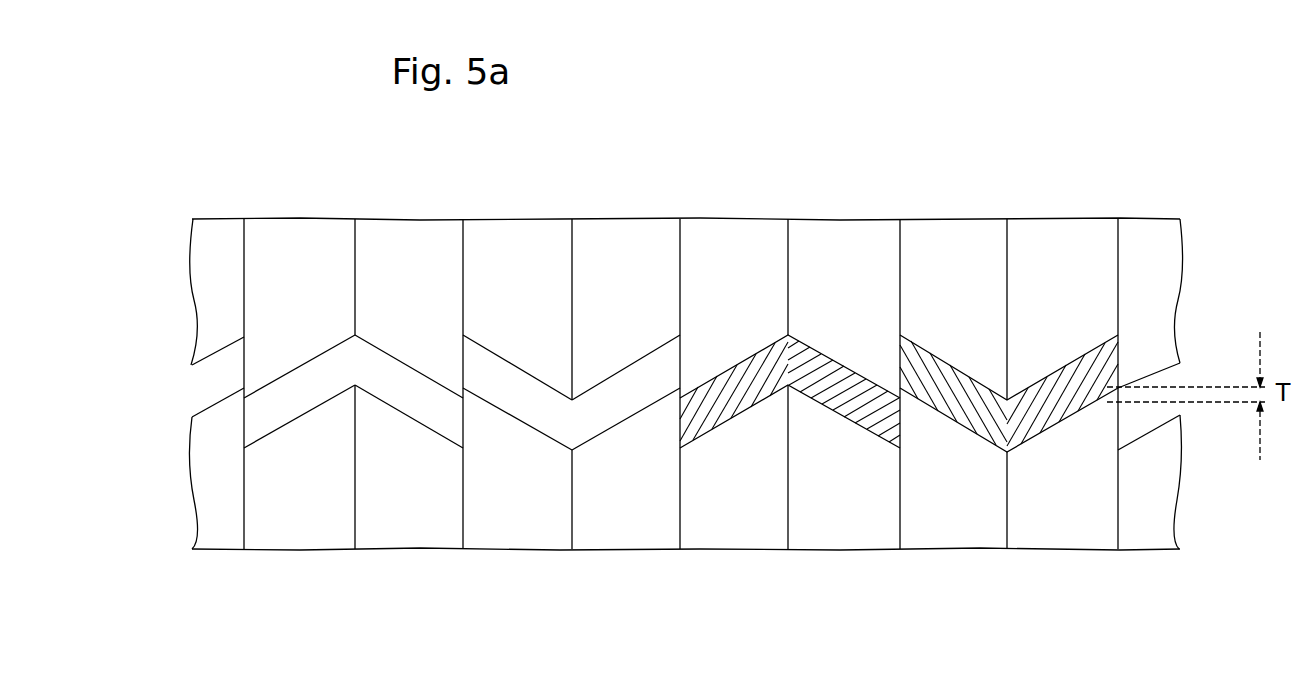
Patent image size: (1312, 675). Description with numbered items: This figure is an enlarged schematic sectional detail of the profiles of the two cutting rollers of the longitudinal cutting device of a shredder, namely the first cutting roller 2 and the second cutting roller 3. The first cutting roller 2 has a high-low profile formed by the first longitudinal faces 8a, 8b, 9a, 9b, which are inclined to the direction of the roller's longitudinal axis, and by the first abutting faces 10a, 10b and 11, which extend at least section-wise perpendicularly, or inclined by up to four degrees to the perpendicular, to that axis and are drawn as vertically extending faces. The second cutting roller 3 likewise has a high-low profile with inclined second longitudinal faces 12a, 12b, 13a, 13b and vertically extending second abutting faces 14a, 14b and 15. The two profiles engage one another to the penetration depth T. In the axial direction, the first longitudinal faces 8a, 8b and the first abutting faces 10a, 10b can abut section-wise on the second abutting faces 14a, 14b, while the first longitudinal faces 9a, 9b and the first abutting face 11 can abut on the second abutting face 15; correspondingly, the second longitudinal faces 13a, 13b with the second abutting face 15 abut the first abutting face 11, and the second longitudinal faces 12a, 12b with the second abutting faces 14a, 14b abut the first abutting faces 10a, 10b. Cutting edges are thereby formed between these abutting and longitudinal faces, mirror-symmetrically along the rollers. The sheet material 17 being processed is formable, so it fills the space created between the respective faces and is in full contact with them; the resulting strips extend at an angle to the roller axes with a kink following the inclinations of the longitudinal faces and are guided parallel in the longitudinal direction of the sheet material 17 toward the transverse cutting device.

The first cutting roller 2 is at (1136, 217).
The second cutting roller 3 is at (1096, 551).
The first longitudinal face 8a is at (300, 366).
The first longitudinal face 8b is at (622, 370).
The first longitudinal face 9a is at (397, 359).
The first longitudinal face 9b is at (522, 370).
The first abutting face 10a is at (243, 373).
The first abutting face 10b is at (677, 361).
The first abutting face 11 is at (466, 357).
The second longitudinal face 12a is at (305, 413).
The second longitudinal face 12b is at (615, 425).
The second longitudinal face 13a is at (405, 414).
The second longitudinal face 13b is at (513, 417).
The second abutting face 14a is at (247, 428).
The second abutting face 14b is at (677, 425).
The second abutting face 15 is at (461, 417).
The sheet material 17 is at (823, 375).